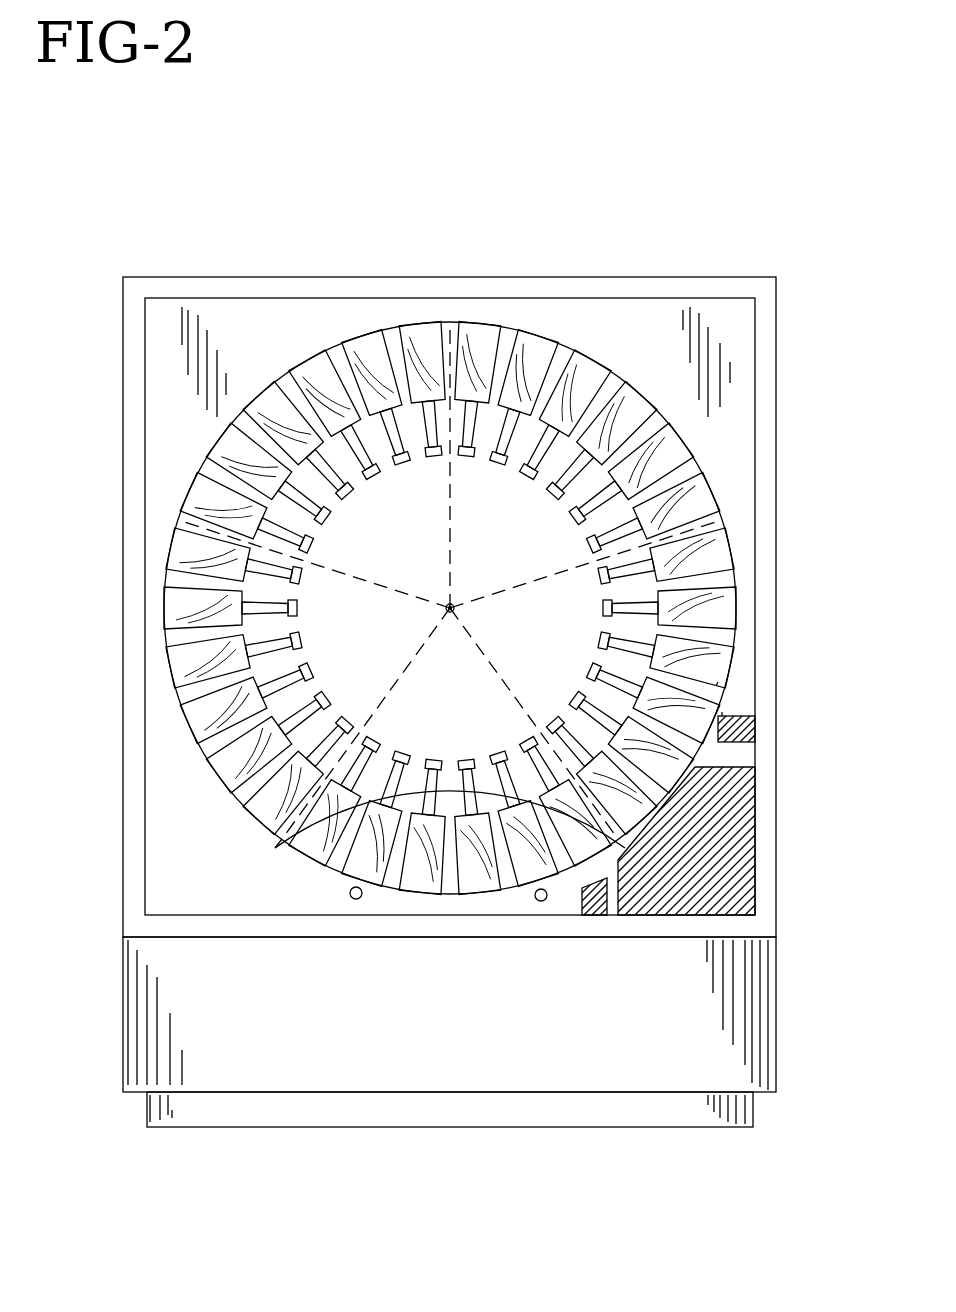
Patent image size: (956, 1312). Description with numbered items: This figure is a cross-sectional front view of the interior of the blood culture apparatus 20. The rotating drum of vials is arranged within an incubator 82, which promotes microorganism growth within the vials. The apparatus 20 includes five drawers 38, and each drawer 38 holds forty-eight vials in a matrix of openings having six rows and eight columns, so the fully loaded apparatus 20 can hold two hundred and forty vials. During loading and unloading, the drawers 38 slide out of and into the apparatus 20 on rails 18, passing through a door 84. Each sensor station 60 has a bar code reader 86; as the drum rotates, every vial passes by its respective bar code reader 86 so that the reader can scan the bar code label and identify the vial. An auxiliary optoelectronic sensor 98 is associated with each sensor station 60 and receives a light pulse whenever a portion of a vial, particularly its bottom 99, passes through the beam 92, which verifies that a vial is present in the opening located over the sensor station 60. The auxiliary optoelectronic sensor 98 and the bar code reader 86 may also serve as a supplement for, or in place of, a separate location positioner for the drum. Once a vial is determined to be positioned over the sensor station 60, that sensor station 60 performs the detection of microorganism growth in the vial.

The blood culture apparatus 20 is at (324, 272).
The incubator 82 is at (657, 292).
The drawer 38 is at (180, 640).
The door 84 is at (312, 823).
The rail 18 is at (356, 900).
The sensor station 60 is at (742, 822).
The auxiliary optoelectronic sensor 98 is at (748, 738).
The beam 92 is at (722, 712).
The vial bottom 99 is at (718, 682).
The bar code reader 86 is at (602, 905).